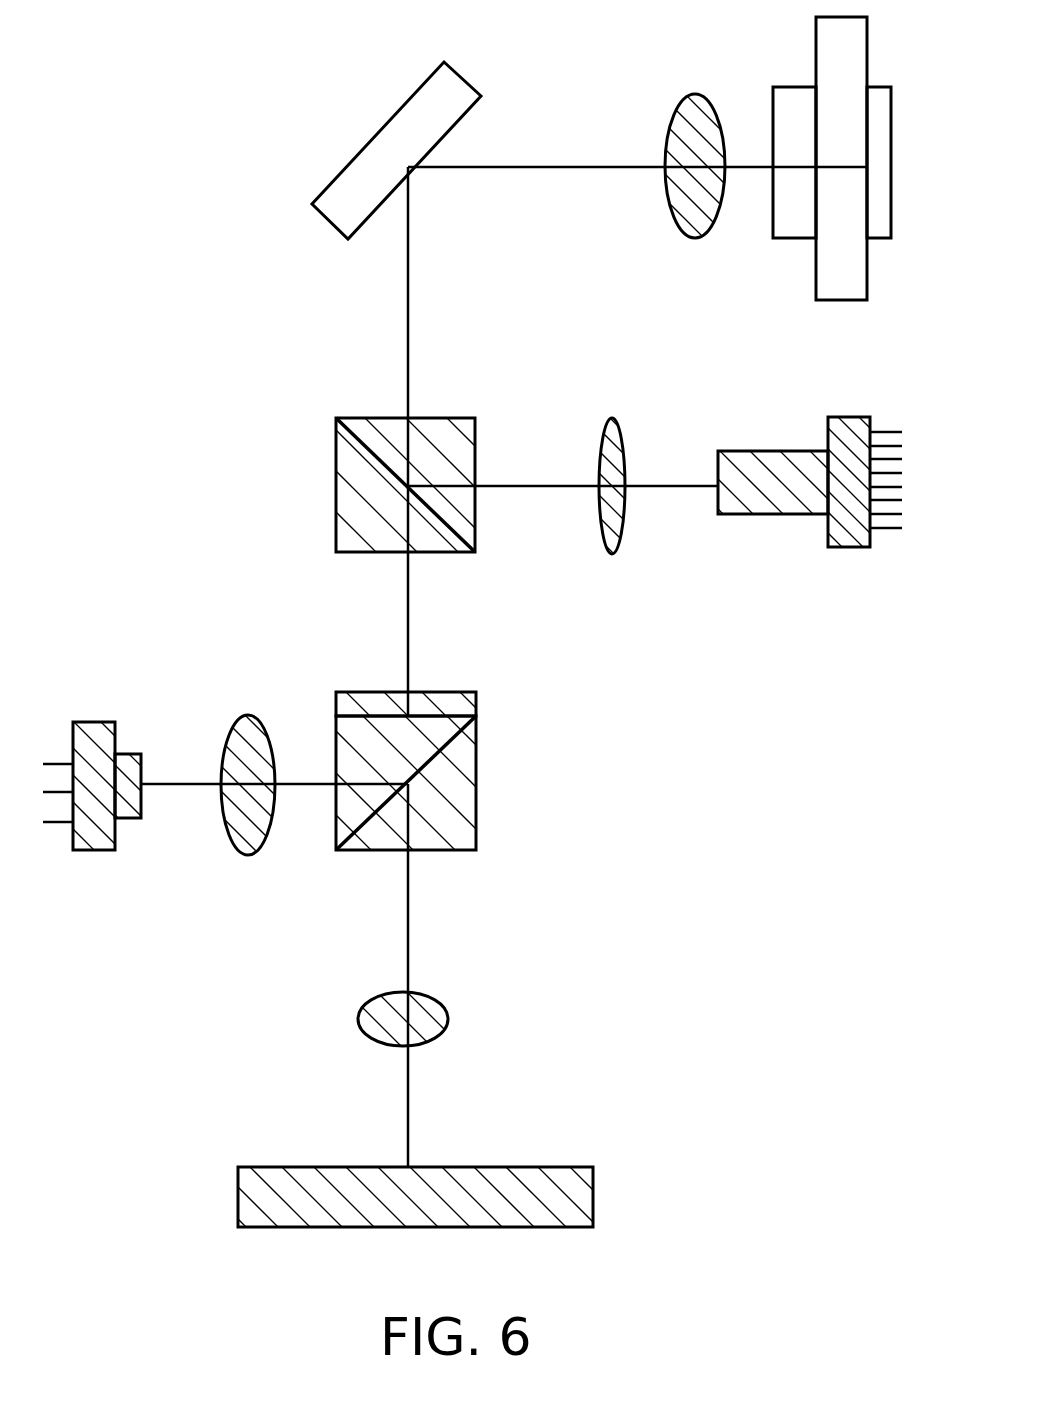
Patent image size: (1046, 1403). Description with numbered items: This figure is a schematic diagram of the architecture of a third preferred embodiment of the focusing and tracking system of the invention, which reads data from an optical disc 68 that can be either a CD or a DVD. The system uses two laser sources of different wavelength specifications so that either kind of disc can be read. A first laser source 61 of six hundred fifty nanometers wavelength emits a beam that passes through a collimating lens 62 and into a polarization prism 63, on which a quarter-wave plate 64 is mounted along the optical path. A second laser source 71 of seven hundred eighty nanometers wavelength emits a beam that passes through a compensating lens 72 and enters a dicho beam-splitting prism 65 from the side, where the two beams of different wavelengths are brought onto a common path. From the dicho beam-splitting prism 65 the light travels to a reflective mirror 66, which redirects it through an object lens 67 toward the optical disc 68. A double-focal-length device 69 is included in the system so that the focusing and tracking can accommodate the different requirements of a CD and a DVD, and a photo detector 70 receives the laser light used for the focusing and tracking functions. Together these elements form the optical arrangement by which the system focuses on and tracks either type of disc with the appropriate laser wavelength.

The first laser source 61 is at (100, 785).
The collimating lens 62 is at (258, 810).
The polarization prism 63 is at (450, 783).
The λ/4 plate 64 is at (447, 702).
The dicho beam-splitting prism 65 is at (372, 485).
The reflective mirror 66 is at (412, 130).
The object lens 67 is at (693, 127).
The optical disc 68 is at (797, 123).
The double-focal-length device 69 is at (423, 1010).
The photo detector 70 is at (552, 1192).
The second laser source 71 is at (847, 440).
The compensating lens 72 is at (610, 462).